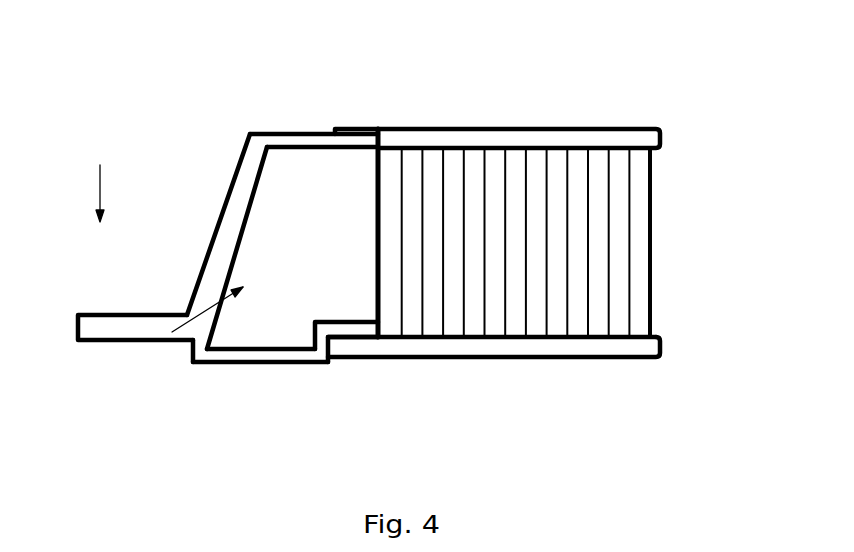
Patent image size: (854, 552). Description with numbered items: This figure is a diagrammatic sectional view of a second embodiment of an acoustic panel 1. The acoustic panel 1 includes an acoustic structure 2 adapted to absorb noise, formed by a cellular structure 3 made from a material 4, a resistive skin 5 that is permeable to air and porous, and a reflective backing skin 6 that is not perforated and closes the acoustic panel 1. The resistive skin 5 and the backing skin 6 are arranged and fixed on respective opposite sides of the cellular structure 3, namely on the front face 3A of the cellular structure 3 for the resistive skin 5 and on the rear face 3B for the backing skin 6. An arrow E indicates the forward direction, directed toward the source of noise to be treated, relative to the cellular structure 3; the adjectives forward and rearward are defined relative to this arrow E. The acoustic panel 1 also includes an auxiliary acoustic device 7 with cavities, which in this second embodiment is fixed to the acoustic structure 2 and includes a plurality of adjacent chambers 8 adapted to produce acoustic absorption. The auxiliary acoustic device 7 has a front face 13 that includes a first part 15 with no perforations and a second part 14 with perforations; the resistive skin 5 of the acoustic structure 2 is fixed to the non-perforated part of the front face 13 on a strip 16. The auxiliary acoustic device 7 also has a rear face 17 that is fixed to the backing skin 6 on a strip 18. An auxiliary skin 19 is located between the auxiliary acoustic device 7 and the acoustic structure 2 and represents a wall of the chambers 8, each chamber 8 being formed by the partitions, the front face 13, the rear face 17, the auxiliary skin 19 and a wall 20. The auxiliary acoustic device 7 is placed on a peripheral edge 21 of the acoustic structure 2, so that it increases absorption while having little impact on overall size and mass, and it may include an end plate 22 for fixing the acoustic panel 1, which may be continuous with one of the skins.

The acoustic panel 1 is at (210, 105).
The acoustic structure 2 is at (645, 100).
The cellular structure 3 is at (612, 230).
The front face of the cellular structure 3A is at (655, 328).
The rear face of the cellular structure 3B is at (657, 156).
The material 4 is at (638, 273).
The resistive skin 5 is at (530, 343).
The backing skin 6 is at (493, 136).
The auxiliary acoustic device with cavities 7 is at (237, 215).
The chambers 8 is at (172, 332).
The front face of the auxiliary acoustic device 13 is at (292, 365).
The second part of the front face 14 is at (220, 355).
The first part of the front face 15 is at (345, 327).
The strip 16 is at (365, 338).
The rear face of the auxiliary acoustic device 17 is at (307, 133).
The strip 18 is at (360, 128).
The auxiliary skin 19 is at (382, 187).
The wall 20 is at (223, 253).
The peripheral edge 21 is at (407, 362).
The end plate 22 is at (95, 333).
The arrow E is at (100, 188).